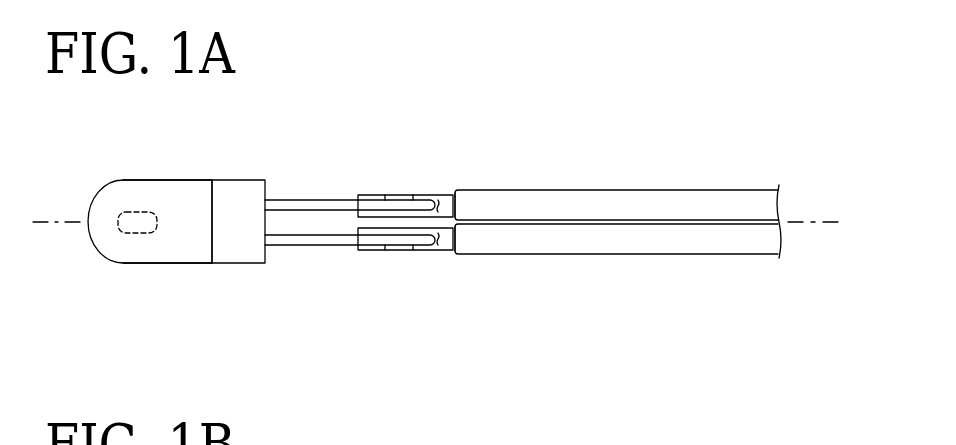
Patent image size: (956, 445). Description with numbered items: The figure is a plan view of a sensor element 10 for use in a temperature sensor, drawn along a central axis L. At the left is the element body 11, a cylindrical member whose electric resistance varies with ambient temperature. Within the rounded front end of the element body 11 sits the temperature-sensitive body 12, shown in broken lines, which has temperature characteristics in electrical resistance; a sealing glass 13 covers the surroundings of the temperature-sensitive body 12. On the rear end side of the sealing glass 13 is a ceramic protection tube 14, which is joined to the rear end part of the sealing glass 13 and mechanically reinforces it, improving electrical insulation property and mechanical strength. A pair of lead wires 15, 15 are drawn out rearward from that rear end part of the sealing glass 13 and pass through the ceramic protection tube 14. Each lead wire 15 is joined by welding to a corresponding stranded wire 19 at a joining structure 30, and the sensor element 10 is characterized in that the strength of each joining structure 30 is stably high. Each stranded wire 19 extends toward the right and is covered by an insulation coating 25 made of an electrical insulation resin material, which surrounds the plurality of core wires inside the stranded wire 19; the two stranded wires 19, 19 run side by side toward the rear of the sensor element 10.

The optical axis L is at (57, 220).
The sensor element 10 is at (424, 138).
The element body 11 is at (193, 272).
The temperature-sensitive body 12 is at (140, 210).
The sealing glass 13 is at (177, 180).
The ceramic protection tube 14 is at (235, 180).
The lead wire 15 is at (295, 199).
The stranded wire 19 is at (526, 182).
The insulation coating 25 is at (582, 190).
The joining structure 30 is at (386, 187).